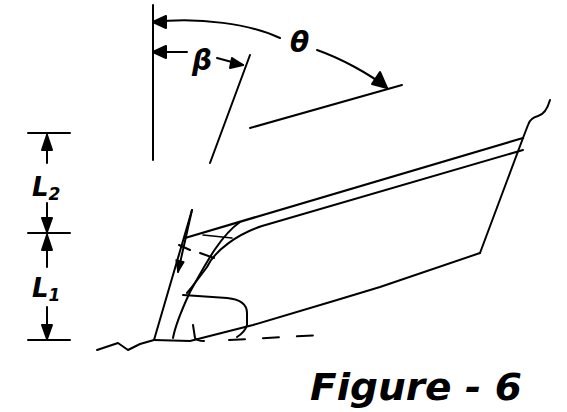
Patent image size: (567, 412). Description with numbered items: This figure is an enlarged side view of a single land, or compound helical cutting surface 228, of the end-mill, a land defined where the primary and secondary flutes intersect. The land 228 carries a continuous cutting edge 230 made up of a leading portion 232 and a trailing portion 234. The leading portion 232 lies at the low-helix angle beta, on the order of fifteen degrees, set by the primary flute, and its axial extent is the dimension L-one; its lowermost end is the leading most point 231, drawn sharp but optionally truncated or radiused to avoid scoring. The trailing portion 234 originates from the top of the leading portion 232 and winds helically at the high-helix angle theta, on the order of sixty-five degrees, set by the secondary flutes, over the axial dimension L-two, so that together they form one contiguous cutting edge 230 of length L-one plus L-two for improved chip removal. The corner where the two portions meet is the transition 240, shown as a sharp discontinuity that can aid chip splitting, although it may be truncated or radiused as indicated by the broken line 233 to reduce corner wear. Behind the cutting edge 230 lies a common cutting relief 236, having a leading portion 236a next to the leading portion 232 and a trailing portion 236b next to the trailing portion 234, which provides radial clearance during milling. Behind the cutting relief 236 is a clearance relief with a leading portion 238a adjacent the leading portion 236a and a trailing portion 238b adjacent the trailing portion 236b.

The compound helical cutting surface 228 is at (443, 256).
The cutting edge 230 is at (183, 242).
The leading most point 231 is at (97, 363).
The leading portion 232 is at (165, 300).
The broken line 233 is at (223, 260).
The trailing portion 234 is at (286, 208).
The cutting relief 236 is at (492, 182).
The leading portion of cutting relief 236a is at (243, 334).
The trailing portion of cutting relief 236b is at (397, 181).
The leading portion of clearance relief 238a is at (183, 340).
The trailing portion of clearance relief 238b is at (545, 103).
The transition 240 is at (207, 223).